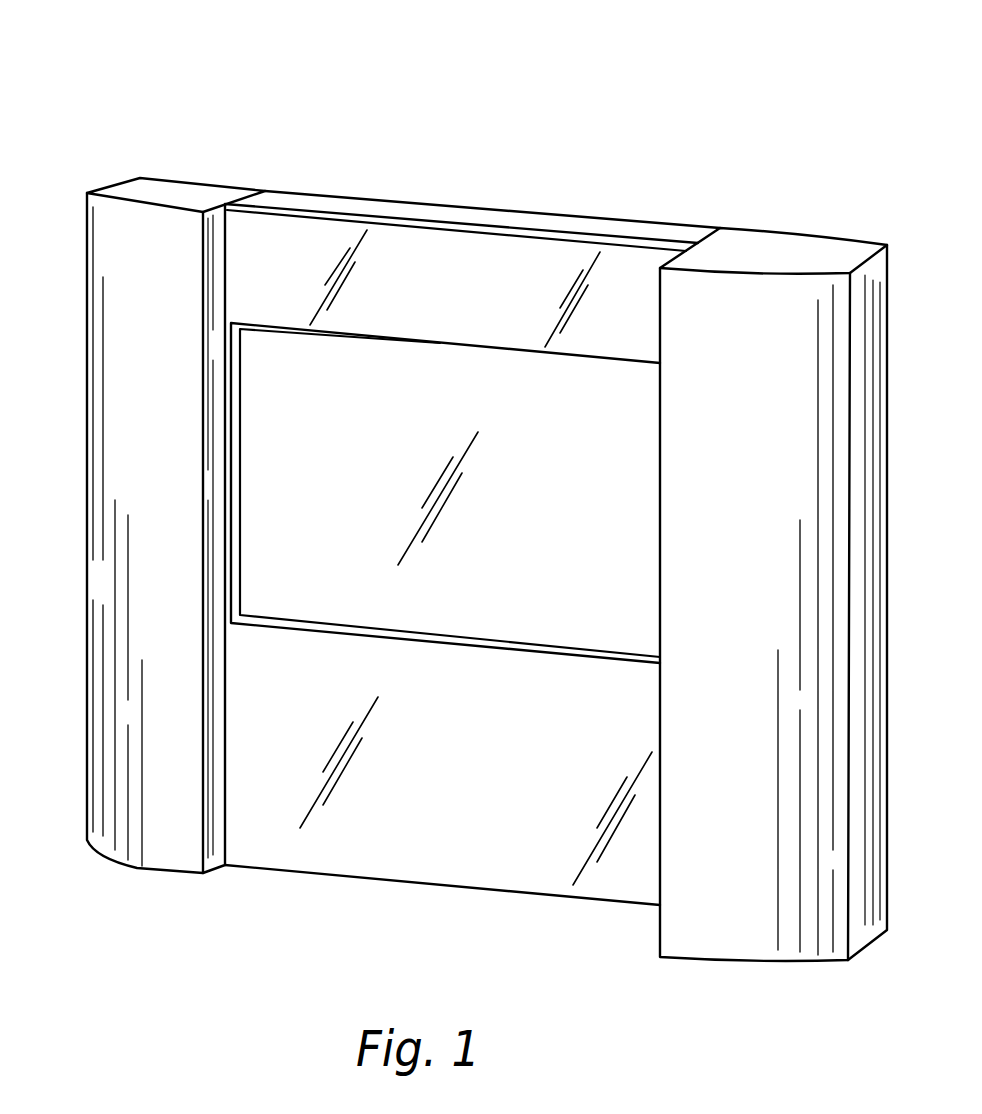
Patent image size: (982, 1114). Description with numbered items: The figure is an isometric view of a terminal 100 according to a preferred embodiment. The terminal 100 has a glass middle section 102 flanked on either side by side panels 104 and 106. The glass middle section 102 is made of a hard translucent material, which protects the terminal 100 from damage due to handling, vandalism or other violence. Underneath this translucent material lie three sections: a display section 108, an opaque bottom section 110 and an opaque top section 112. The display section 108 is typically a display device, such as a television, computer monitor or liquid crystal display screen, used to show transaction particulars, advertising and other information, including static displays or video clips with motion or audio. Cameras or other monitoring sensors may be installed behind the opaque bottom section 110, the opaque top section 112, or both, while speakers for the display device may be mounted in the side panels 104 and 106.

The terminal 100 is at (237, 98).
The glass middle section 102 is at (555, 228).
The side panel 104 is at (86, 323).
The side panel 106 is at (805, 257).
The display section 108 is at (527, 600).
The opaque bottom section 110 is at (350, 853).
The opaque top section 112 is at (456, 258).